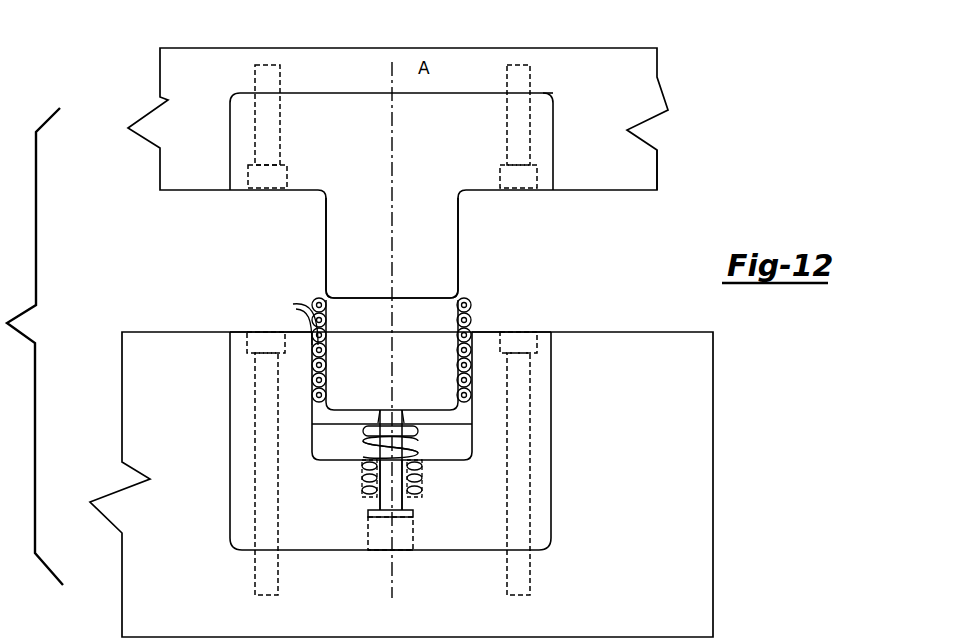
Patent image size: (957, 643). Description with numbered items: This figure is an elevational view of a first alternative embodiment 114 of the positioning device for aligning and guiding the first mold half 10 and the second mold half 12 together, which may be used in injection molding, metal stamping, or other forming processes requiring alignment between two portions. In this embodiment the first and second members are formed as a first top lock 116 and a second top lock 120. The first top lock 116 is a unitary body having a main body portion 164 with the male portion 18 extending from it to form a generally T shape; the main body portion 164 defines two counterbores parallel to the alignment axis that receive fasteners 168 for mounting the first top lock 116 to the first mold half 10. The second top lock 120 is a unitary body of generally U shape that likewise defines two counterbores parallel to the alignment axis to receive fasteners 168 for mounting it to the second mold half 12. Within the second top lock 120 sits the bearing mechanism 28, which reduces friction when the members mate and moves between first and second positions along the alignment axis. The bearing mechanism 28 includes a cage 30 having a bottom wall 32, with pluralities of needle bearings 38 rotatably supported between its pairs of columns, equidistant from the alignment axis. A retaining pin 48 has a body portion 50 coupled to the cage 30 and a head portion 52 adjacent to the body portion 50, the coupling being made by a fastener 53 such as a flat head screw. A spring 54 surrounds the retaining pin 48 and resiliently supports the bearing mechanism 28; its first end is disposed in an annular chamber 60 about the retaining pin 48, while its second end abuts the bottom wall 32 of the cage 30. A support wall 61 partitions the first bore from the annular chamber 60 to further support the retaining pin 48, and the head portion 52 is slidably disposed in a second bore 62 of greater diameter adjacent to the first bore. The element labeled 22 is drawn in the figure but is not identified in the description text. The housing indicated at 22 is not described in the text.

The first mold half 10 is at (657, 170).
The second mold half 12 is at (713, 397).
The male portion 18 is at (368, 248).
The housing 22 is at (334, 440).
The bearing mechanism 28 is at (302, 384).
The cage 30 is at (426, 348).
The bottom wall 32 is at (381, 418).
The needle bearings 38 is at (296, 304).
The retaining pin 48 is at (366, 500).
The body portion 50 is at (404, 503).
The head portion 52 is at (403, 520).
The fastener 53 is at (397, 410).
The spring 54 is at (412, 452).
The annular chamber 60 is at (362, 473).
The support wall 61 is at (415, 472).
The second bore 62 is at (378, 545).
The first alternative embodiment 114 is at (648, 251).
The first top lock 116 is at (302, 105).
The second top lock 120 is at (312, 545).
The main body portion 164 is at (425, 155).
The fasteners 168 is at (255, 105).